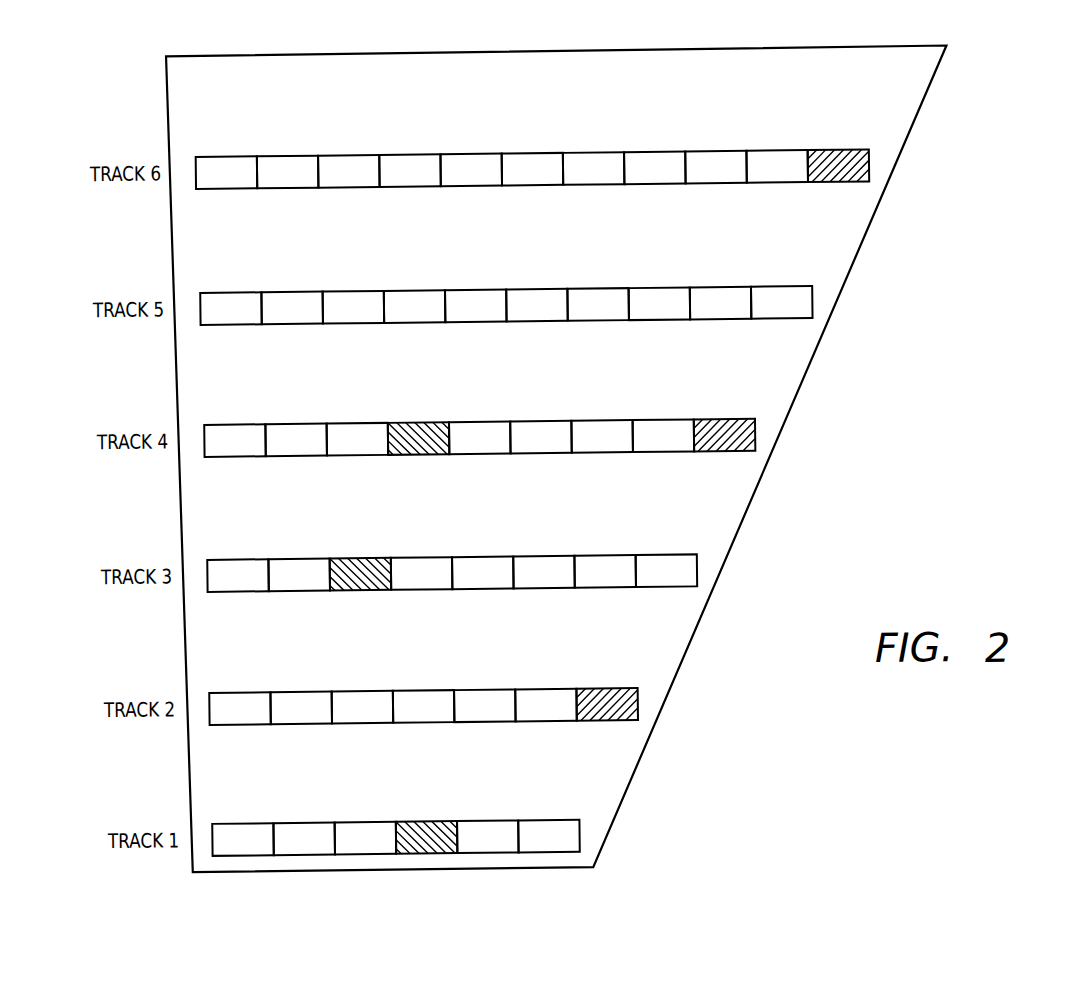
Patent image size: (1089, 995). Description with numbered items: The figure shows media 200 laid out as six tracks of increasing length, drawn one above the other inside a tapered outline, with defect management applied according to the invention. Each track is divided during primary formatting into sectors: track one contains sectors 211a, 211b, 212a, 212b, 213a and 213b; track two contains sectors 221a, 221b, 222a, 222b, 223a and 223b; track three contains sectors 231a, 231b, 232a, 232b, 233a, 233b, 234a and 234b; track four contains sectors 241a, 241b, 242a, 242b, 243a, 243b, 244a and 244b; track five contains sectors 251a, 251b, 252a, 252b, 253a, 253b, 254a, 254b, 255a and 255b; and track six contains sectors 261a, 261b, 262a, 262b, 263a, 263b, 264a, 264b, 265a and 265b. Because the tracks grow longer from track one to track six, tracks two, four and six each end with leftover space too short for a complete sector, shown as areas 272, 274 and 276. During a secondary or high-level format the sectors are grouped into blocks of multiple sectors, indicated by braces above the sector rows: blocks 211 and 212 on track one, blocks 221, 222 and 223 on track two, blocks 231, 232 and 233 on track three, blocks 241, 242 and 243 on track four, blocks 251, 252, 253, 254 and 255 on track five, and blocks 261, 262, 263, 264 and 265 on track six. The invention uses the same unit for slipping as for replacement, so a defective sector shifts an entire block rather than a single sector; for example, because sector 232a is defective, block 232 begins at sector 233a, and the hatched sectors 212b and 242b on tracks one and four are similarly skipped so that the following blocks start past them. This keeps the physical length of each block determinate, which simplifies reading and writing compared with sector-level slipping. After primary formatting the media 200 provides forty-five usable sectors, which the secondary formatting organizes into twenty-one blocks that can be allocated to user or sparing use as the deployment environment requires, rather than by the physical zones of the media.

The media 200 is at (171, 80).
The block 211 is at (208, 775).
The sector 211a is at (239, 831).
The sector 211b is at (300, 831).
The block 212 is at (453, 775).
The sector 212a is at (361, 831).
The sector 212b is at (422, 831).
The sector 213a is at (483, 831).
The sector 213b is at (545, 831).
The block 221 is at (206, 644).
The sector 221a is at (237, 700).
The sector 221b is at (298, 700).
The block 222 is at (329, 644).
The sector 222a is at (360, 700).
The sector 222b is at (421, 700).
The block 223 is at (451, 644).
The sector 223a is at (482, 700).
The sector 223b is at (543, 700).
The area 272 is at (631, 696).
The block 231 is at (206, 511).
The sector 231a is at (237, 567).
The sector 231b is at (298, 567).
The block 232 is at (451, 511).
The defective sector 232a is at (359, 567).
The sector 232b is at (420, 567).
The block 233 is at (696, 511).
The sector 233a is at (481, 567).
The sector 233b is at (543, 567).
The sector 234a is at (604, 567).
The sector 234b is at (665, 567).
The block 241 is at (204, 376).
The sector 241a is at (235, 432).
The sector 241b is at (296, 432).
The block 242 is at (449, 376).
The sector 242a is at (358, 432).
The sector 242b is at (419, 432).
The block 243 is at (694, 376).
The sector 243a is at (480, 432).
The sector 243b is at (541, 432).
The sector 244a is at (602, 432).
The sector 244b is at (664, 432).
The area 274 is at (751, 428).
The block 251 is at (202, 244).
The sector 251a is at (233, 300).
The sector 251b is at (294, 300).
The block 252 is at (324, 244).
The sector 252a is at (355, 300).
The sector 252b is at (416, 300).
The block 253 is at (447, 244).
The sector 253a is at (477, 300).
The sector 253b is at (539, 300).
The block 254 is at (692, 244).
The sector 254a is at (600, 300).
The sector 254b is at (661, 300).
The block 255 is at (814, 244).
The sector 255a is at (722, 300).
The sector 255b is at (783, 300).
The block 261 is at (199, 108).
The sector 261a is at (230, 164).
The sector 261b is at (291, 164).
The block 262 is at (321, 108).
The sector 262a is at (352, 164).
The sector 262b is at (413, 164).
The block 263 is at (444, 108).
The sector 263a is at (474, 164).
The sector 263b is at (536, 164).
The block 264 is at (689, 108).
The sector 264a is at (597, 164).
The sector 264b is at (658, 164).
The block 265 is at (811, 108).
The sector 265a is at (719, 164).
The sector 265b is at (780, 164).
The area 276 is at (868, 160).